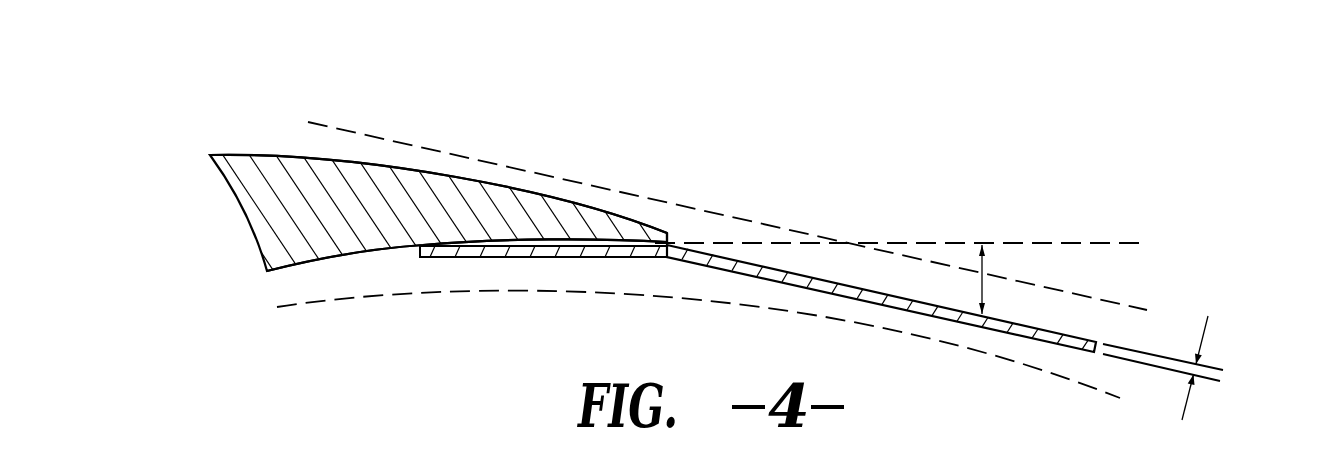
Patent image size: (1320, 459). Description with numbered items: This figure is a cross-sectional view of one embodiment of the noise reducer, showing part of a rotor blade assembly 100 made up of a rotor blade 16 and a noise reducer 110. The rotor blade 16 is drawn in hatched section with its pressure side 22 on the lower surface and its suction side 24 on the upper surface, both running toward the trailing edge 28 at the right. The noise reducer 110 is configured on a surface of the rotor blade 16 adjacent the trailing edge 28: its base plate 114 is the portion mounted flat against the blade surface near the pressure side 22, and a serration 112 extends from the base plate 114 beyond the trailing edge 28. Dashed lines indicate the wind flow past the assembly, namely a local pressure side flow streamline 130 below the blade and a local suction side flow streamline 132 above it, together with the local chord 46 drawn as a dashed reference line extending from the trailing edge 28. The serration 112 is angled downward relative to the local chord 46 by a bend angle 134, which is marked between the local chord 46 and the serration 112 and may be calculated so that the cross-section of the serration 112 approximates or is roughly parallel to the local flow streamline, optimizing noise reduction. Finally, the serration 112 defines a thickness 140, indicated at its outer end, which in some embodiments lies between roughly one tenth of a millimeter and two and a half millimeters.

The rotor blade 16 is at (281, 157).
The pressure side 22 is at (331, 258).
The suction side 24 is at (513, 185).
The trailing edge 28 is at (677, 237).
The local chord 46 is at (1089, 242).
The rotor blade assembly 100 is at (370, 113).
The noise reducer 110 is at (660, 266).
The serration 112 is at (892, 309).
The base plate 114 is at (493, 258).
The local pressure side flow streamline 130 is at (560, 290).
The local suction side flow streamline 132 is at (610, 183).
The bend angle 134 is at (978, 279).
The thickness 140 is at (1207, 328).